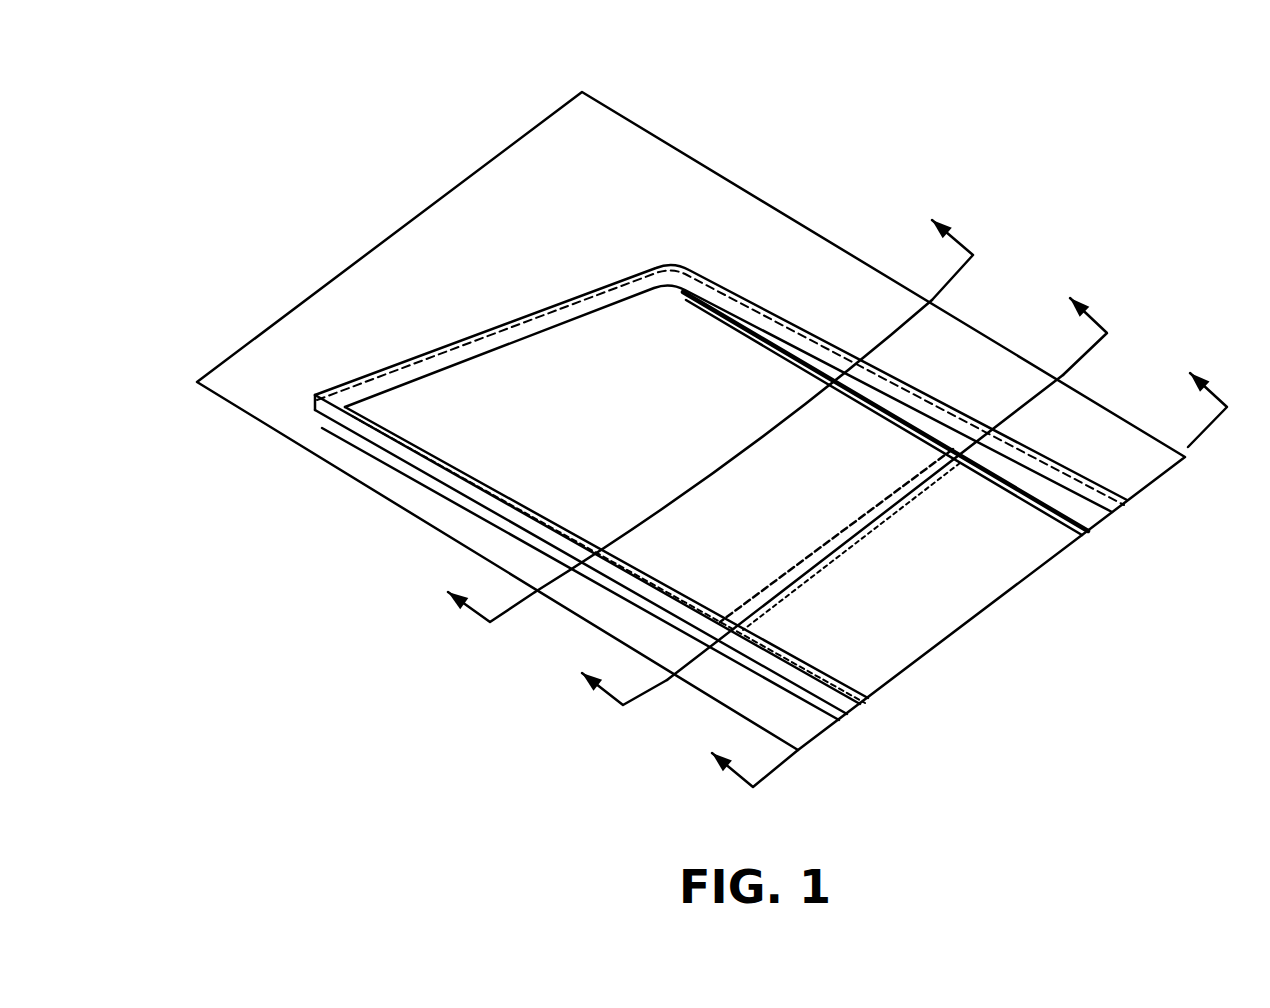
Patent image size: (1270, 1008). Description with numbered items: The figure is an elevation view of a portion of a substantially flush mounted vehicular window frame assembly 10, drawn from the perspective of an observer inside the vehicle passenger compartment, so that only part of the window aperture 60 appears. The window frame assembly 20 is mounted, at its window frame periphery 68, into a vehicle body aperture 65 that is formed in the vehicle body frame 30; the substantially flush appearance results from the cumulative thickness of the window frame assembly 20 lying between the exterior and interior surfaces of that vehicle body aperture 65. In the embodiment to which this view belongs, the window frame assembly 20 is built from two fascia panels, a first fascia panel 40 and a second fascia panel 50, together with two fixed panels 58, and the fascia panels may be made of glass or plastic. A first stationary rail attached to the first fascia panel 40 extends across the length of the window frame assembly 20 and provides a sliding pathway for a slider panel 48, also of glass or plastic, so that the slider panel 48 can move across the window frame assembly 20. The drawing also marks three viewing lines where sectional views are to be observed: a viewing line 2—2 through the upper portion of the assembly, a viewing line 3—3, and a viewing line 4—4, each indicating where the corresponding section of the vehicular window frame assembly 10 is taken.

The vehicular window frame assembly 10 is at (940, 93).
The window frame assembly 20 is at (415, 467).
The vehicle body frame 30 is at (318, 327).
The first fascia panel 40 is at (1108, 527).
The slider panel 48 is at (913, 637).
The second fascia panel 50 is at (866, 706).
The fixed panel 58 is at (505, 378).
The window aperture 60 is at (930, 610).
The vehicle body aperture 65 is at (620, 337).
The window frame periphery 68 is at (860, 707).
The viewing line 2— 2 is at (951, 563).
The viewing line 3— 3 is at (826, 484).
The viewing line 4— 4 is at (694, 406).